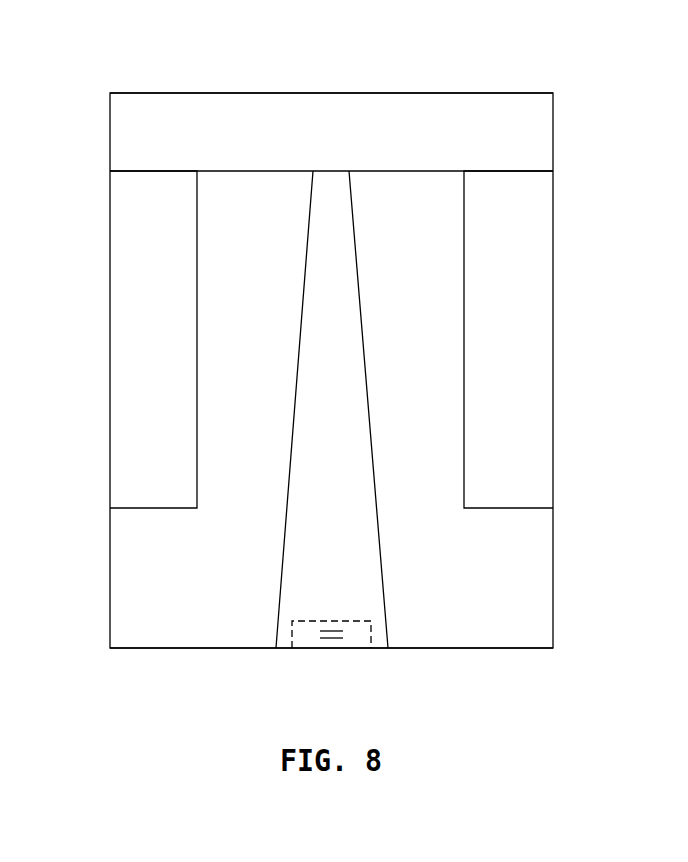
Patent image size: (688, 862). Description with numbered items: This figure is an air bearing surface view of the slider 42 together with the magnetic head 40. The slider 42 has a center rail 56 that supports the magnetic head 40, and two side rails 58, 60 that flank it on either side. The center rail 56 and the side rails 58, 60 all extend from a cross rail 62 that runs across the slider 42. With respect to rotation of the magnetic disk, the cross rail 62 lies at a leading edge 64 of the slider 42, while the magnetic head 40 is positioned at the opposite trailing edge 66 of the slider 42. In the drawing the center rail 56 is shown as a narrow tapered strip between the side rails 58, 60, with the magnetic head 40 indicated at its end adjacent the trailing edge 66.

The magnetic head 40 is at (310, 640).
The slider 42 is at (108, 596).
The center rail 56 is at (315, 283).
The side rail 58 is at (125, 250).
The side rail 60 is at (535, 252).
The cross rail 62 is at (252, 105).
The leading edge 64 is at (431, 92).
The trailing edge 66 is at (451, 650).